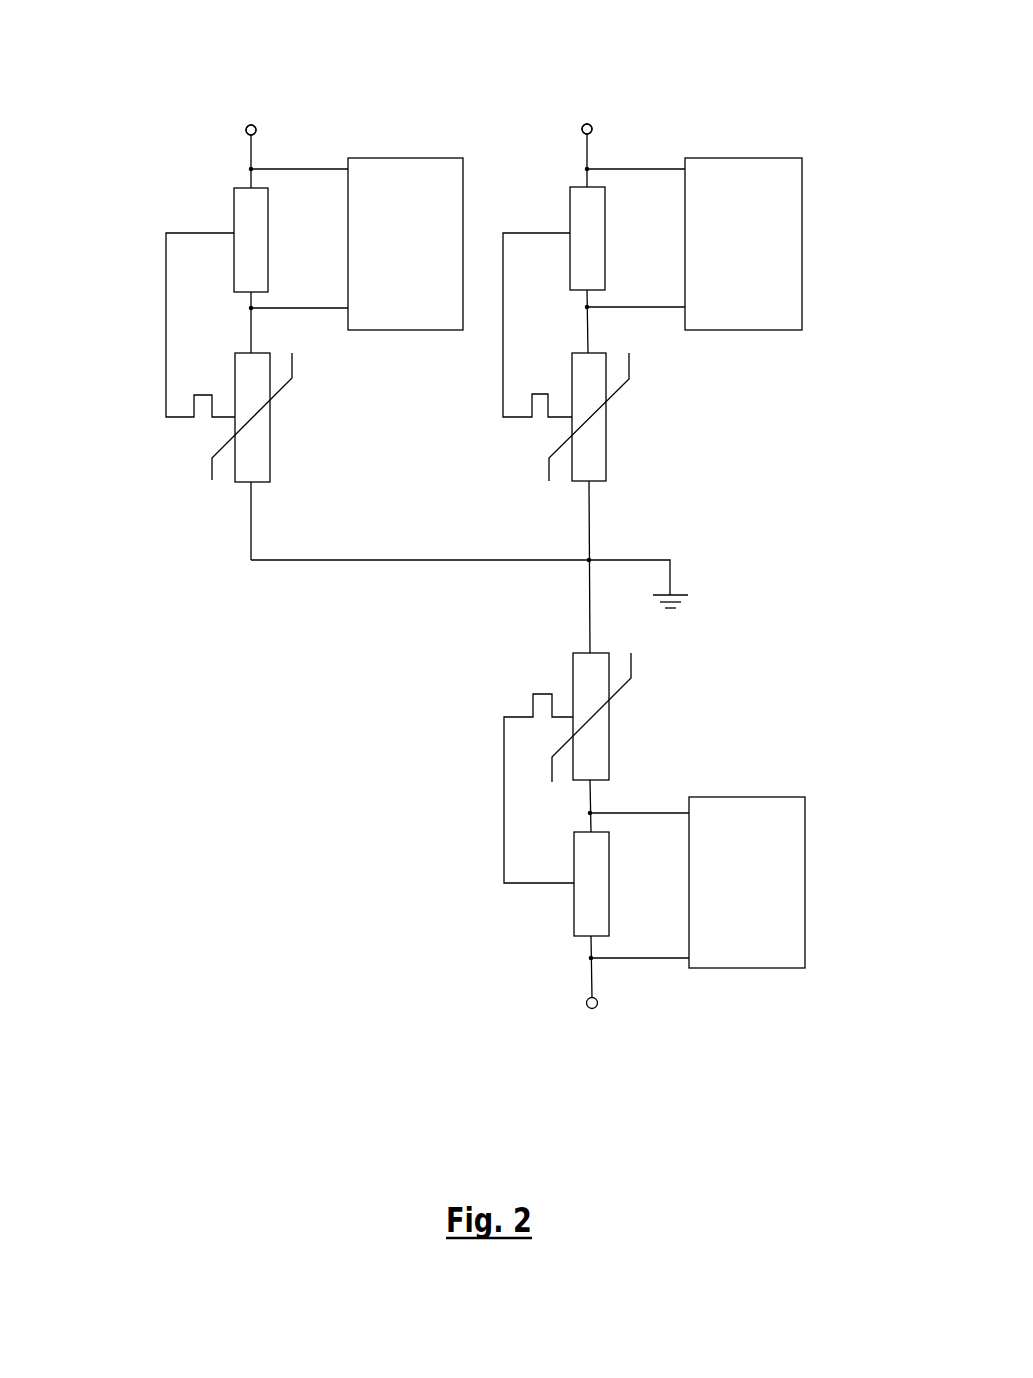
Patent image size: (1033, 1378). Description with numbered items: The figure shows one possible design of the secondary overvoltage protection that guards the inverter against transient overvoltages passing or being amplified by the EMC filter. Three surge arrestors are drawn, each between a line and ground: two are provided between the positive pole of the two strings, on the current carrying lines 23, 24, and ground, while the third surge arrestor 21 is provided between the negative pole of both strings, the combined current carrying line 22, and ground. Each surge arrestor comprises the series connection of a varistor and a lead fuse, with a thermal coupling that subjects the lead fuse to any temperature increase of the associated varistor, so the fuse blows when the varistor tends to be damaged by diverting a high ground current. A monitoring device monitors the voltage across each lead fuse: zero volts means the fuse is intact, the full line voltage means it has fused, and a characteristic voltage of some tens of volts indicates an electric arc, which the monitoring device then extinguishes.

The surge arrestor 21 is at (486, 808).
The combined current carrying line 22 is at (598, 1003).
The current carrying line 23 is at (593, 127).
The current carrying line 24 is at (247, 125).